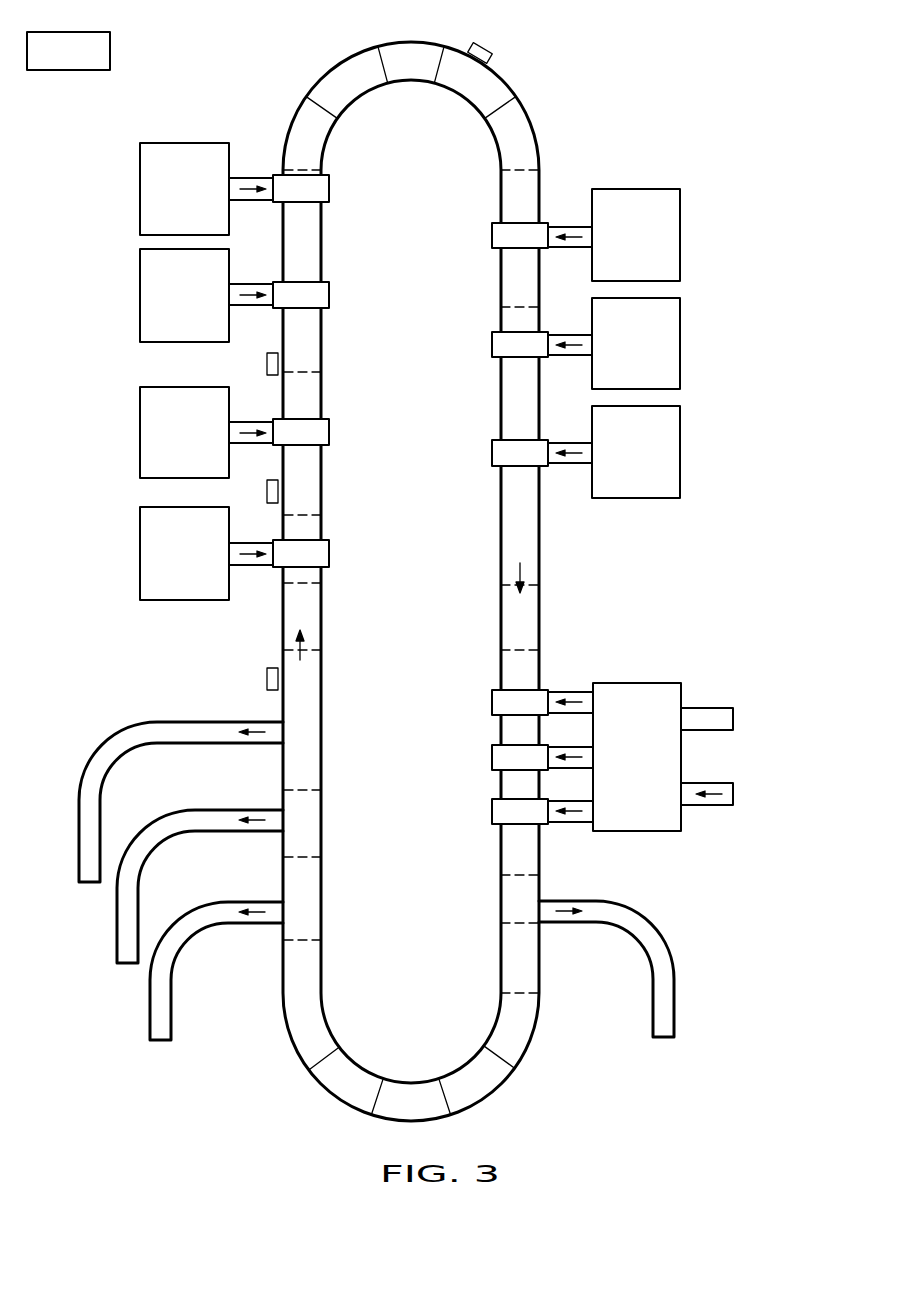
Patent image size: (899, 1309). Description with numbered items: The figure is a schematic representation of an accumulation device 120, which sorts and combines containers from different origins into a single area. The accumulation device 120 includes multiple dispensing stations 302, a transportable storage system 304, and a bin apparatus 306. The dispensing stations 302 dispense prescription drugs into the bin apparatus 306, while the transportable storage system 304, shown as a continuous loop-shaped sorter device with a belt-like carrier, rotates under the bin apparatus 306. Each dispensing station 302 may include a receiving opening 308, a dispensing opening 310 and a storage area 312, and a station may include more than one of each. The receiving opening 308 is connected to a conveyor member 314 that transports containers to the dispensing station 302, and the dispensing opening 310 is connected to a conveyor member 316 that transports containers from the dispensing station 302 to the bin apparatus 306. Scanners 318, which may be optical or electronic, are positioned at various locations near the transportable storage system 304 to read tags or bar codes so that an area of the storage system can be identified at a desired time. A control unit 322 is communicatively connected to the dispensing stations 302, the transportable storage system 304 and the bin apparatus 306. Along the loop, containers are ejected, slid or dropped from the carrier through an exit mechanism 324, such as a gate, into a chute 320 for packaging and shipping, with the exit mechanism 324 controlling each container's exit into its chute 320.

The accumulation device 120 is at (682, 93).
The dispensing station 302 is at (140, 143).
The transportable storage system 304 is at (490, 1093).
The bin apparatus 306 is at (330, 186).
The receiving opening 308 is at (682, 717).
The dispensing opening 310 is at (235, 188).
The storage area 312 is at (165, 180).
The conveyor member 314 is at (713, 707).
The conveyor member 316 is at (240, 178).
The scanner 318 is at (491, 48).
The chute 320 is at (133, 722).
The control unit 322 is at (110, 55).
The exit mechanism 324 is at (283, 745).